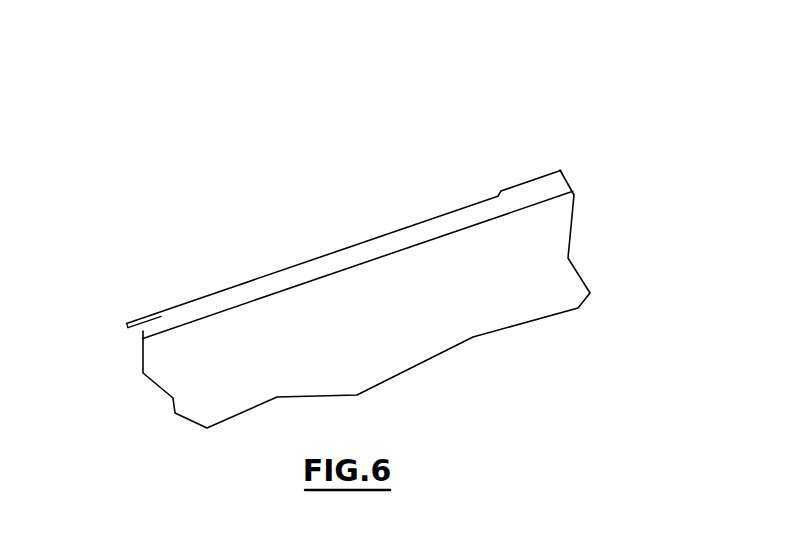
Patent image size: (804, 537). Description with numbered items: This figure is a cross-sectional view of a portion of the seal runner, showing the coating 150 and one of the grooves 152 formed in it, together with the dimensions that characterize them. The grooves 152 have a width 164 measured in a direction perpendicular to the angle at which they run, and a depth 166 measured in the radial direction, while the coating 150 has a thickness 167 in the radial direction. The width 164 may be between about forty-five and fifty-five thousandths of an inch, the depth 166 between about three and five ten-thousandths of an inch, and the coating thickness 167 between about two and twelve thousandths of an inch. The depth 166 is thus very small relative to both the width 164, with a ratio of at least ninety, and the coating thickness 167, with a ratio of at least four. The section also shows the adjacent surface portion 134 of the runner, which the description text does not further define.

The coating 150 is at (147, 331).
The grooves 152 is at (410, 227).
The raised portion 134 is at (534, 176).
The width 164 is at (496, 191).
The coating thickness 167 is at (584, 122).
The depth 166 is at (125, 329).